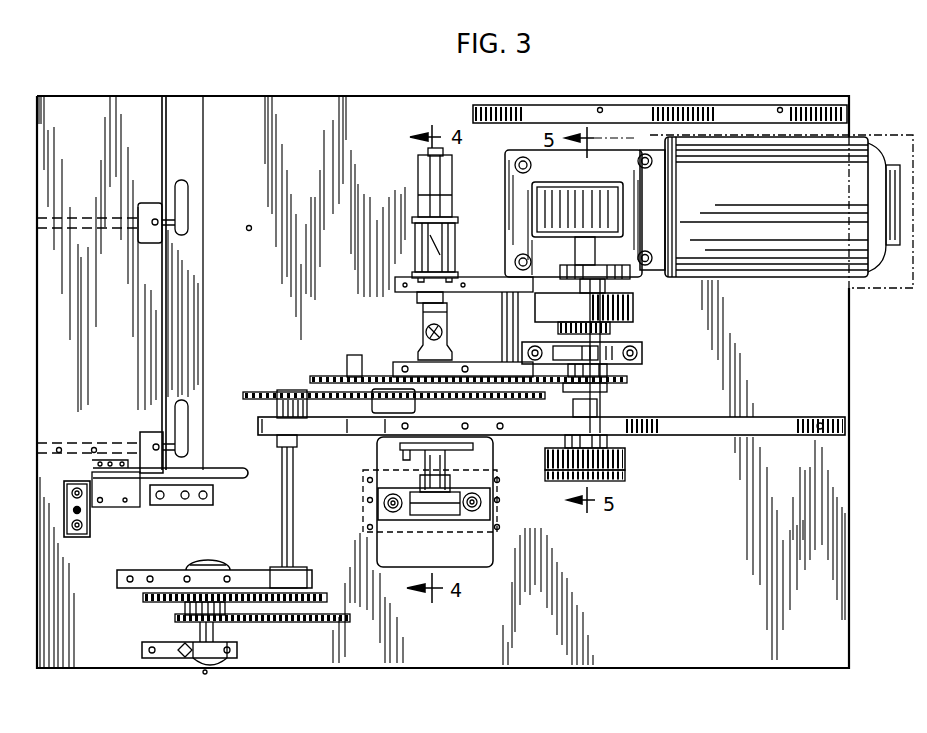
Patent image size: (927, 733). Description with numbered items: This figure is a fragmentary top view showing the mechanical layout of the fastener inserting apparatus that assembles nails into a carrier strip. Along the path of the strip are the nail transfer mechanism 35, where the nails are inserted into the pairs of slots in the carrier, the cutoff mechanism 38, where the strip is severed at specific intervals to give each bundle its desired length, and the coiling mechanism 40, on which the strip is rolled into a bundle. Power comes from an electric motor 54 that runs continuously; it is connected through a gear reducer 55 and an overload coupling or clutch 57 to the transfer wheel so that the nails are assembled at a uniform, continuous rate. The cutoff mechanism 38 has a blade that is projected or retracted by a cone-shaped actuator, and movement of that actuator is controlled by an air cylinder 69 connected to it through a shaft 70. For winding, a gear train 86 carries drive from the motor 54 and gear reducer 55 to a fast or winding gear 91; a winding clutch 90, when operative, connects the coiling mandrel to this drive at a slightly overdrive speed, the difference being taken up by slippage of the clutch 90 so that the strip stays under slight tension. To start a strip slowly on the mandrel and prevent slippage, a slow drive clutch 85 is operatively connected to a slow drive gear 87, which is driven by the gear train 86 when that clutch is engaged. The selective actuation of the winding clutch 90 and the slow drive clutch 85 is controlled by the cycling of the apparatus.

The nail transfer mechanism 35 is at (642, 455).
The cutoff mechanism 38 is at (510, 500).
The coiling mechanism 40 is at (312, 517).
The electric motor 54 is at (850, 152).
The gear reducer 55 is at (557, 207).
The overload coupling or clutch 57 is at (612, 312).
The air cylinder 69 is at (430, 180).
The shaft 70 is at (425, 321).
The slow drive clutch 85 is at (228, 562).
The gear train 86 is at (645, 386).
The slow drive gear 87 is at (165, 600).
The winding clutch 90 is at (223, 662).
The winding gear 91 is at (230, 622).